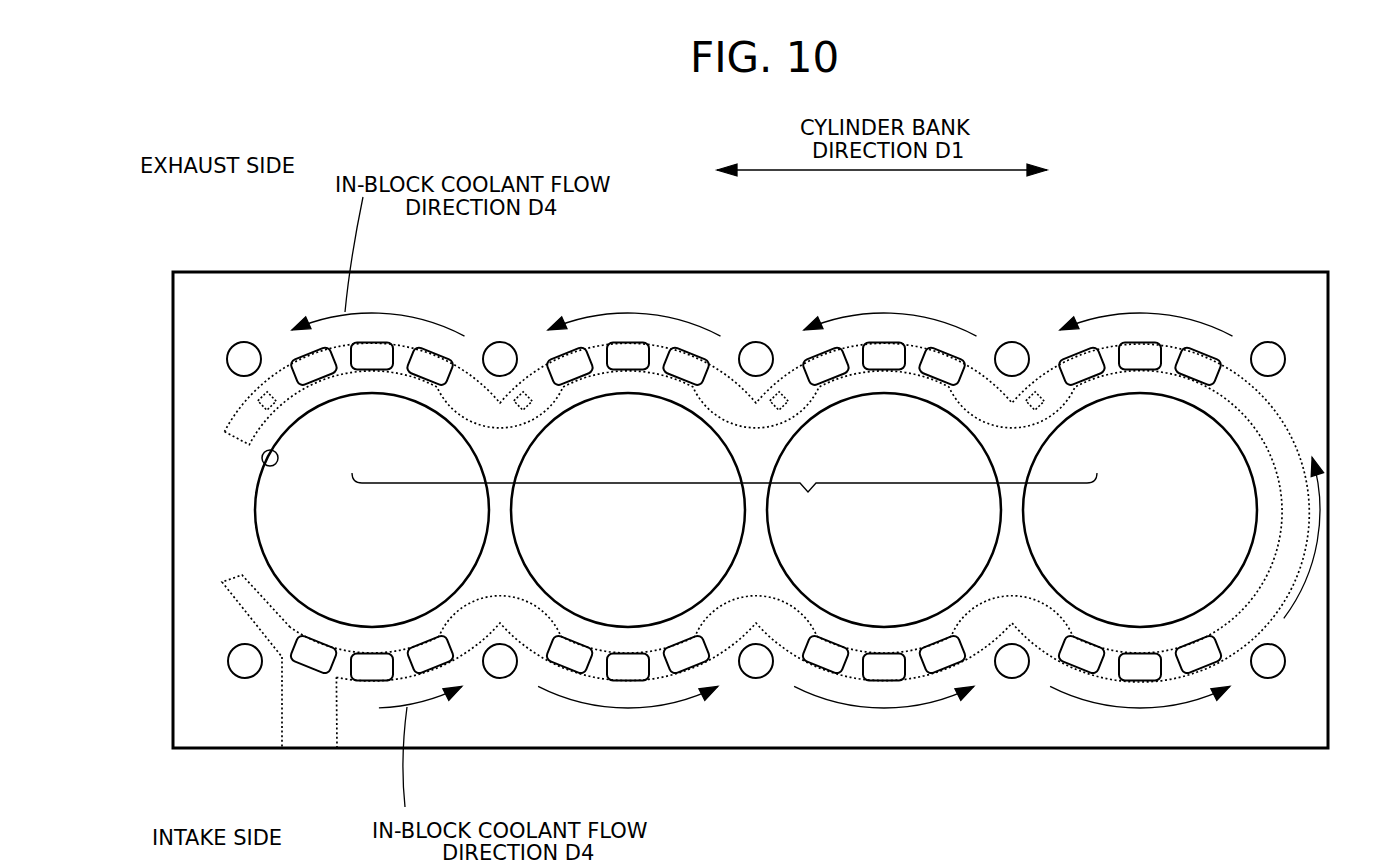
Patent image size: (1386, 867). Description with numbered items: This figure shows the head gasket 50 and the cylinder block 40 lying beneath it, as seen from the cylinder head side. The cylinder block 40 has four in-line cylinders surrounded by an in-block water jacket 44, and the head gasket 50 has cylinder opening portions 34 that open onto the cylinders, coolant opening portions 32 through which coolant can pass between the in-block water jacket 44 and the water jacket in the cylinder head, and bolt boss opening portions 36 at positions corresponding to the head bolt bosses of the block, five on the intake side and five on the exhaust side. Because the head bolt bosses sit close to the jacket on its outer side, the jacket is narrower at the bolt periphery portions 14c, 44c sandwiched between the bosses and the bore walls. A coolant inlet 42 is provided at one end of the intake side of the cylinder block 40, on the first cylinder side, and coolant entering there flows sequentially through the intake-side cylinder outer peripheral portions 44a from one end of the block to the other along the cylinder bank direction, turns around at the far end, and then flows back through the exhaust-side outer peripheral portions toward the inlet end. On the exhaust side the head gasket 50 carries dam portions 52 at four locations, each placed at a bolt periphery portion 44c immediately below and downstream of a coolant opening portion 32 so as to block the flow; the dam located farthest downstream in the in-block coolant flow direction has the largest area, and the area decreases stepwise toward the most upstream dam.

The bolt periphery portion 14c is at (273, 635).
The coolant opening portion 32 is at (383, 331).
The cylinder opening portion 34 is at (265, 452).
The bolt boss opening portion 36 is at (244, 359).
The cylinder block 40 is at (162, 720).
The coolant inlet 42 is at (323, 735).
The in-block water jacket 44 is at (1300, 427).
The cylinder outer peripheral portion 44a is at (337, 680).
The bolt periphery portion 44c is at (268, 382).
The head gasket 50 is at (1329, 266).
The dam portion 52 is at (724, 501).